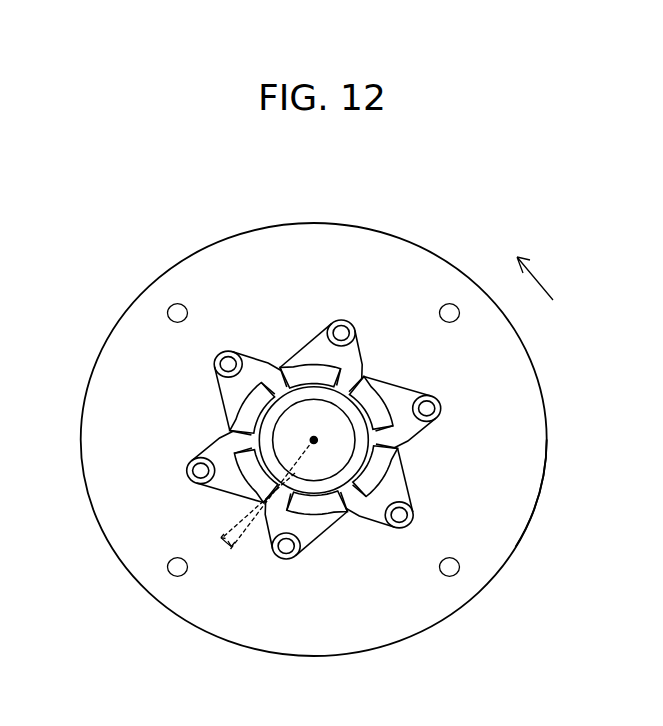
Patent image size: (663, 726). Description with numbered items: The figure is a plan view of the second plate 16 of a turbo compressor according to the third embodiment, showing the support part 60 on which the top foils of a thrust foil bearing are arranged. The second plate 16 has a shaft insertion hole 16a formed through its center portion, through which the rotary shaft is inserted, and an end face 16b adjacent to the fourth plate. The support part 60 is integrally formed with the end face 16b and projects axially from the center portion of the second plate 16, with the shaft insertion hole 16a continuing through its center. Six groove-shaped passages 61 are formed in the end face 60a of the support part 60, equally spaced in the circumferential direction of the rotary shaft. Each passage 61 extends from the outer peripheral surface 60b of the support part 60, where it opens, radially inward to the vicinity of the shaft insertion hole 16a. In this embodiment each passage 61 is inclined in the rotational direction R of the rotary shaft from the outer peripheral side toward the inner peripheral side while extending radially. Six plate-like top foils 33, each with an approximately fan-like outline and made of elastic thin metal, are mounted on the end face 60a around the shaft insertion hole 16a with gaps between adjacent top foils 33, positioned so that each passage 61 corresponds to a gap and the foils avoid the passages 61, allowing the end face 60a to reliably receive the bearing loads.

The second plate 16 is at (465, 262).
The shaft insertion hole 16a is at (298, 413).
The end face 16b is at (512, 505).
The top foil 33 is at (315, 367).
The support part 60 is at (313, 335).
The end face of the support part 60a is at (348, 363).
The outer peripheral surface of the support part 60b is at (400, 436).
The passage 61 is at (277, 377).
The rotational direction R is at (540, 278).